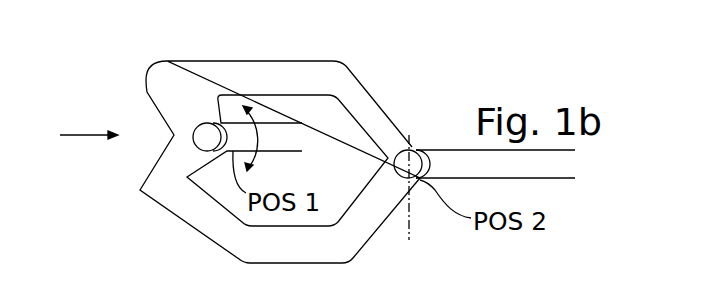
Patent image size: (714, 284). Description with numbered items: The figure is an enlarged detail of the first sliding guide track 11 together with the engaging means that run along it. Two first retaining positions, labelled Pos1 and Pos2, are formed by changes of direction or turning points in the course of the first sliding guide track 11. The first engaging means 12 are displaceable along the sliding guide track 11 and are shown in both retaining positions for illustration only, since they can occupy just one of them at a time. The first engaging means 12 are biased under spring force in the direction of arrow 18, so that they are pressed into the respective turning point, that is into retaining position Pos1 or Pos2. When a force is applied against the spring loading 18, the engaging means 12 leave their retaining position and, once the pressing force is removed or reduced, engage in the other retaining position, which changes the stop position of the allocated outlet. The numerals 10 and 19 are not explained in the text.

The device 10 is at (561, 280).
The first sliding guide track 11 is at (282, 72).
The first engaging means 12 is at (207, 137).
The arrow 18 is at (85, 132).
The displacement direction of roller 19 is at (249, 110).